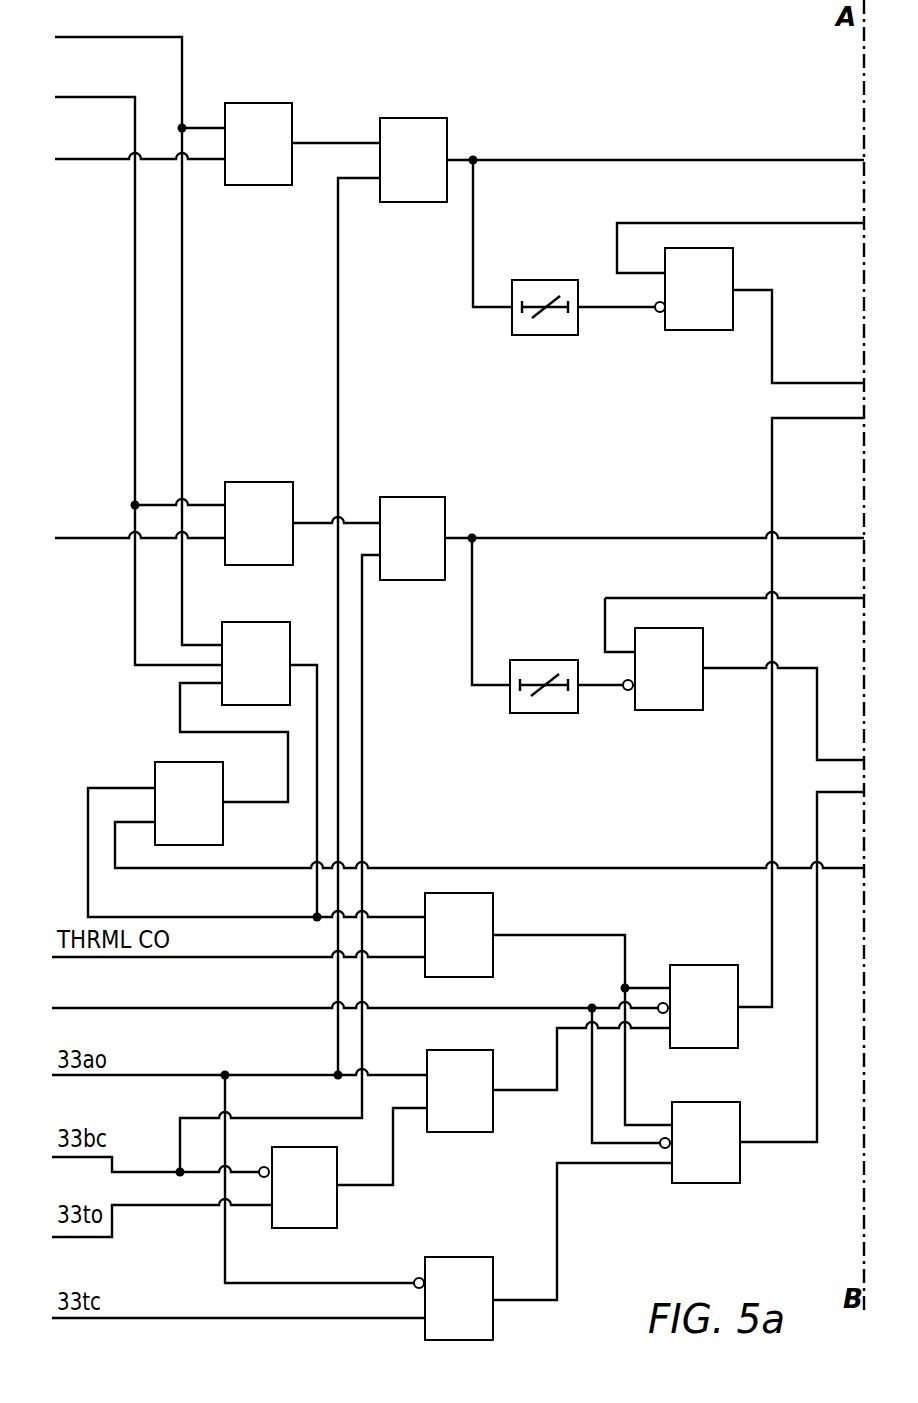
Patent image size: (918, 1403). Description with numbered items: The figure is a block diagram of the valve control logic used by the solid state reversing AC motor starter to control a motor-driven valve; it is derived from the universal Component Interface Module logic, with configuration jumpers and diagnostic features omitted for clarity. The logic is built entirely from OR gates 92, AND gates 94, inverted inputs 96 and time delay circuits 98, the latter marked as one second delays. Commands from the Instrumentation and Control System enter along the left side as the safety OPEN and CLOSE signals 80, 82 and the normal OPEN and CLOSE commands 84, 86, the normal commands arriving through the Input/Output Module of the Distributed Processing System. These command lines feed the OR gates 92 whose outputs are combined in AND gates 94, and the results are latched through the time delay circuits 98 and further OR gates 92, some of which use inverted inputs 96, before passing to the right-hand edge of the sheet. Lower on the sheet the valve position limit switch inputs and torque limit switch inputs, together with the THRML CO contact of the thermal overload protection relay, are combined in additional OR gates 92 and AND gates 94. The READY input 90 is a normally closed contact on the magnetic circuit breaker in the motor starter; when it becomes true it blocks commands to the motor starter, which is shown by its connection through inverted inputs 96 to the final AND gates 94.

The safety OPEN signal 80 is at (70, 37).
The safety CLOSE signal 82 is at (70, 97).
The normal OPEN command 84 is at (70, 159).
The normal CLOSE command 86 is at (65, 537).
The READY input 90 is at (62, 1010).
The OR gate 92 is at (292, 118).
The AND gate 94 is at (447, 135).
The inverted input 96 is at (655, 313).
The time delay circuit 98 is at (545, 280).